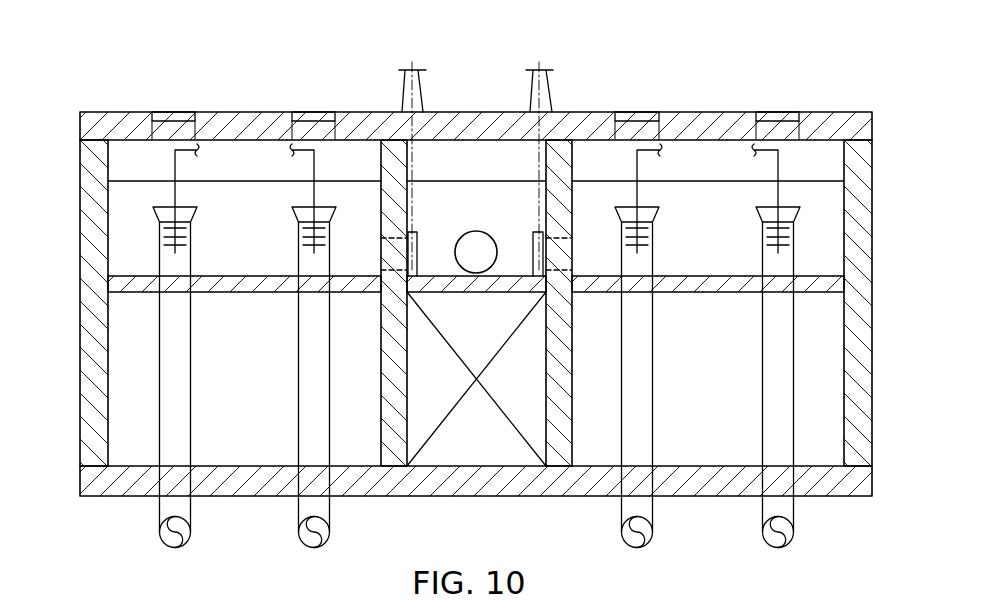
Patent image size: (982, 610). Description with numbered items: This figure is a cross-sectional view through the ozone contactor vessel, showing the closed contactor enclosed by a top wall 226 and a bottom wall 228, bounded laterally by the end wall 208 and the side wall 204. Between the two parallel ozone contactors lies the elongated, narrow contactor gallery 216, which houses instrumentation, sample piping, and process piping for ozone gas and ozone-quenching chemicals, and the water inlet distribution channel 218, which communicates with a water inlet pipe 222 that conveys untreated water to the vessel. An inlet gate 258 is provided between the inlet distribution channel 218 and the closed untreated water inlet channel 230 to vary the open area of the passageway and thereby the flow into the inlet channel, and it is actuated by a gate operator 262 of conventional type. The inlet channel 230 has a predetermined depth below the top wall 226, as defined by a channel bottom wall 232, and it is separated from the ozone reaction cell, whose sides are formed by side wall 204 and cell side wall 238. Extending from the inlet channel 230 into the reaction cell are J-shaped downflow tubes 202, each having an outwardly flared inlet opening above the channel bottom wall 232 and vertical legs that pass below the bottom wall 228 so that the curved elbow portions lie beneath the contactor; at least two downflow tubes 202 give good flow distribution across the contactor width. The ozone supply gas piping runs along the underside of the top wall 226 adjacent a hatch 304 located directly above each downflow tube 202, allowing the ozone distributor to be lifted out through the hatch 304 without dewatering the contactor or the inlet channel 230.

The downflow tube 202 is at (307, 435).
The side wall 204 is at (873, 452).
The end wall 208 is at (74, 456).
The contactor gallery 216 is at (467, 458).
The water inlet distribution channel 218 is at (472, 150).
The water inlet pipe 222 is at (455, 235).
The top wall 226 is at (838, 118).
The bottom wall 228 is at (710, 488).
The untreated water inlet channel 230 is at (702, 148).
The channel bottom wall 232 is at (713, 278).
The cell side wall 238 is at (565, 317).
The inlet gate 258 is at (533, 252).
The gate operator 262 is at (402, 78).
The hatch 304 is at (168, 110).